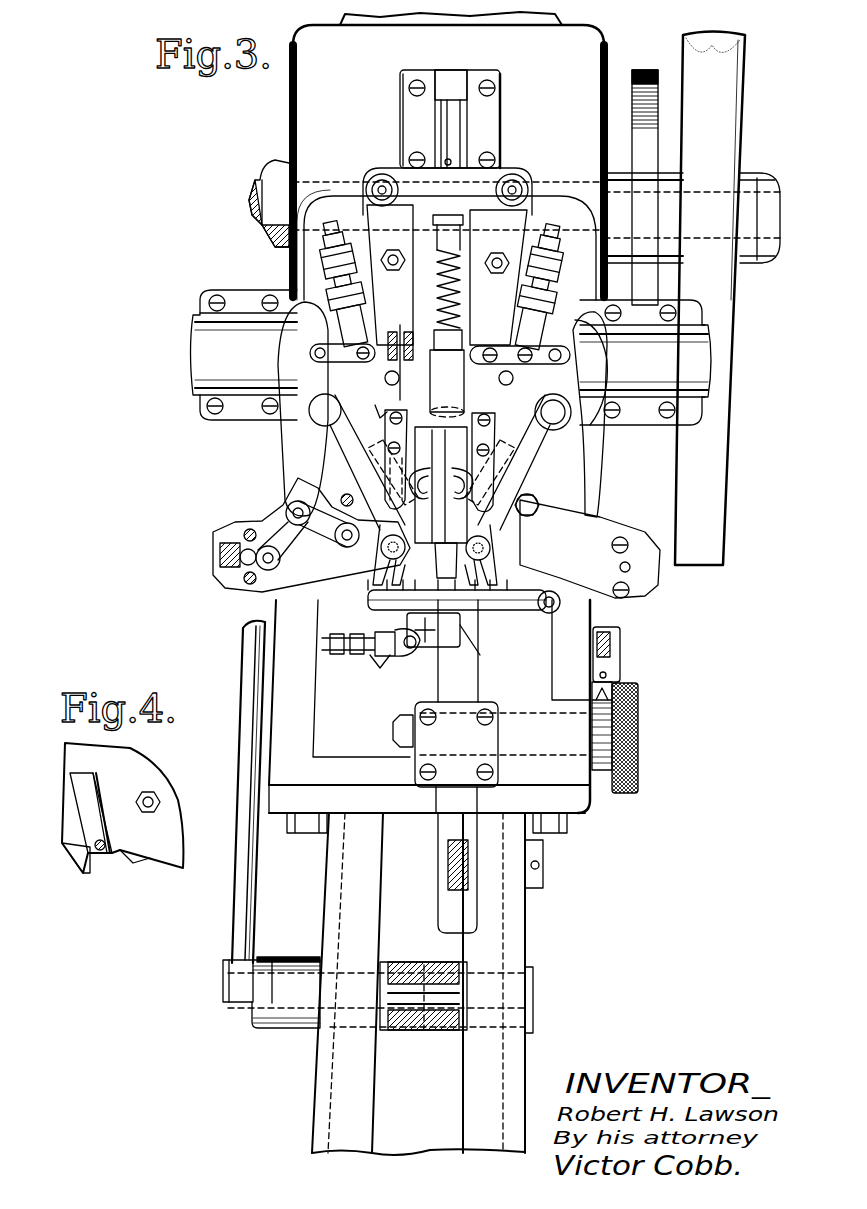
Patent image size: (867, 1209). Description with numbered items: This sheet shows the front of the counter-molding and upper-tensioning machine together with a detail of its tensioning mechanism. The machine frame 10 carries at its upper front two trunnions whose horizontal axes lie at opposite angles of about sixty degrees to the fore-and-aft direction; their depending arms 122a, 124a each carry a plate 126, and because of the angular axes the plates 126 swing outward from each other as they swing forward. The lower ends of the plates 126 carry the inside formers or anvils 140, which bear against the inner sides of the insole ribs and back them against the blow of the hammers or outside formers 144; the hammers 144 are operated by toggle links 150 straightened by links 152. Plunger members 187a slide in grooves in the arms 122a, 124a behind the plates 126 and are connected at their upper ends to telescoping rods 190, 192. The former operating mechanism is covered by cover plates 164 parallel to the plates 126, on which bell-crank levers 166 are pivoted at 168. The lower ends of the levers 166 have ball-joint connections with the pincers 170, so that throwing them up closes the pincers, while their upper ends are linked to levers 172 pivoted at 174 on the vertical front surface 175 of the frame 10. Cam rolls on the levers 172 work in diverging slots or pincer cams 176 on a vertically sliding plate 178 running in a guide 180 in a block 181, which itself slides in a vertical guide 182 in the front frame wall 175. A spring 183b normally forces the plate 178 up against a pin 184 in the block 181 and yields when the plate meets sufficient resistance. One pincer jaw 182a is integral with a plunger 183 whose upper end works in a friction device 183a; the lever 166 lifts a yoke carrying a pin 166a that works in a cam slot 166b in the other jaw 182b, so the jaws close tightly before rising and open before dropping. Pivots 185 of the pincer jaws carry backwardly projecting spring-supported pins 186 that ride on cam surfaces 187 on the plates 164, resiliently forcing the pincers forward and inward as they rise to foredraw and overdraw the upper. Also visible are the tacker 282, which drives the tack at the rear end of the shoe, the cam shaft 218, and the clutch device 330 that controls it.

In FIG. 3, the machine frame 10 is at (426, 156).
In FIG. 3, the vertical front surface 175 is at (418, 119).
In FIG. 3, the vertical guide 182 is at (445, 75).
In FIG. 3, the guide 180 is at (452, 128).
In FIG. 3, the block 181 is at (435, 140).
In FIG. 3, the pin 184 is at (450, 162).
In FIG. 3, the vertically sliding plate 178 is at (410, 178).
In FIG. 3, the pincer cams 176 is at (500, 180).
In FIG. 3, the spring 183b is at (495, 200).
In FIG. 3, the levers 172 is at (508, 240).
In FIG. 3, the pivot 174 is at (508, 262).
In FIG. 3, the clutch device 330 is at (642, 72).
In FIG. 3, the cam shaft 218 is at (778, 218).
In FIG. 3, the depending arm 124a is at (275, 340).
In FIG. 3, the depending arm 122a is at (598, 374).
In FIG. 3, the plunger members 187a is at (600, 350).
In FIG. 3, the telescoping rod 192 is at (444, 284).
In FIG. 3, the telescoping rod 190 is at (443, 349).
In FIG. 3, the plunger 183 is at (445, 383).
In FIG. 3, the friction device 183a is at (398, 368).
In FIG. 3, the pivot 168 is at (575, 425).
In FIG. 3, the links 152 is at (300, 468).
In FIG. 3, the plate 126 is at (262, 522).
In FIG. 3, the toggle links 150 is at (300, 527).
In FIG. 3, the cover plates 164 is at (310, 437).
In FIG. 4, the cover plates 164 is at (165, 860).
In FIG. 3, the pincer jaw 182b is at (535, 565).
In FIG. 3, the bell-crank levers 166 is at (515, 450).
In FIG. 3, the pin 166a is at (498, 490).
In FIG. 3, the cam slot 166b is at (392, 478).
In FIG. 3, the pivots 185 is at (490, 548).
In FIG. 3, the pincer jaw 182a is at (470, 612).
In FIG. 3, the pincers 170 is at (553, 613).
In FIG. 3, the inside formers 140 is at (465, 639).
In FIG. 4, the inside formers 140 is at (78, 868).
In FIG. 3, the tacker 282 is at (378, 658).
In FIG. 4, the cam surfaces 187 is at (88, 808).
In FIG. 4, the spring-supported pins 186 is at (100, 852).
In FIG. 4, the outside formers 144 is at (128, 858).